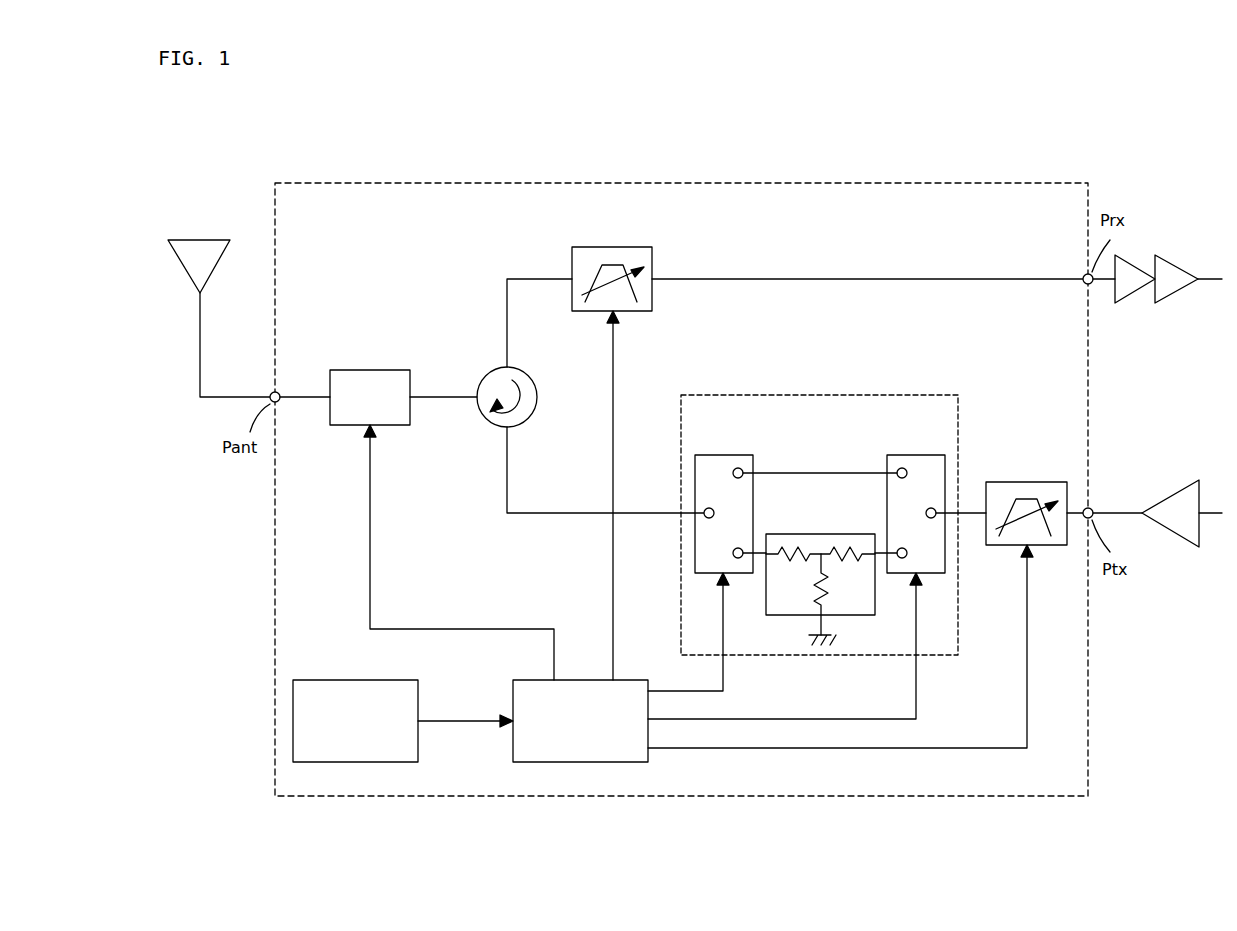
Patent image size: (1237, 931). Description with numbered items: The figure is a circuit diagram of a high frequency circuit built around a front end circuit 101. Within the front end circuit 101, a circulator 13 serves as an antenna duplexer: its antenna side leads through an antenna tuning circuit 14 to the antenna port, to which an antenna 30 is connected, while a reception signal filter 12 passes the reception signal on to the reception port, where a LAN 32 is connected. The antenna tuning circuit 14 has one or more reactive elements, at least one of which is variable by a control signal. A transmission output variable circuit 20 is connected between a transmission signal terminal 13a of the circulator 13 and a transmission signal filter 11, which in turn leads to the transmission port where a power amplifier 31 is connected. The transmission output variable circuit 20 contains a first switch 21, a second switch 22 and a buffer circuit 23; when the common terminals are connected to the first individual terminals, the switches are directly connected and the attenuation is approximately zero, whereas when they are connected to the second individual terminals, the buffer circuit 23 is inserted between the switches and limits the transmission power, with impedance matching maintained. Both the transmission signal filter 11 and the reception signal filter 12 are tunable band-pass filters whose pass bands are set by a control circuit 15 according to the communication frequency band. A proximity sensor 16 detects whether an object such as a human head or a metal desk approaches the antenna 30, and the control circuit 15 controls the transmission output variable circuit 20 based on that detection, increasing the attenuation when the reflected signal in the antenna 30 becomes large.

The front end circuit 101 is at (815, 183).
The antenna 30 is at (200, 240).
The antenna tuning circuit 14 is at (375, 370).
The circulator 13 is at (533, 418).
The transmission signal terminal 13a is at (510, 427).
The reception signal filter 12 is at (615, 247).
The transmission signal filter 11 is at (1030, 482).
The LAN 32 is at (1159, 247).
The power amplifier 31 is at (1170, 497).
The transmission output variable circuit 20 is at (818, 395).
The first switch 21 is at (915, 455).
The second switch 22 is at (725, 455).
The buffer circuit 23 is at (821, 534).
The control circuit 15 is at (634, 680).
The proximity sensor 16 is at (331, 680).